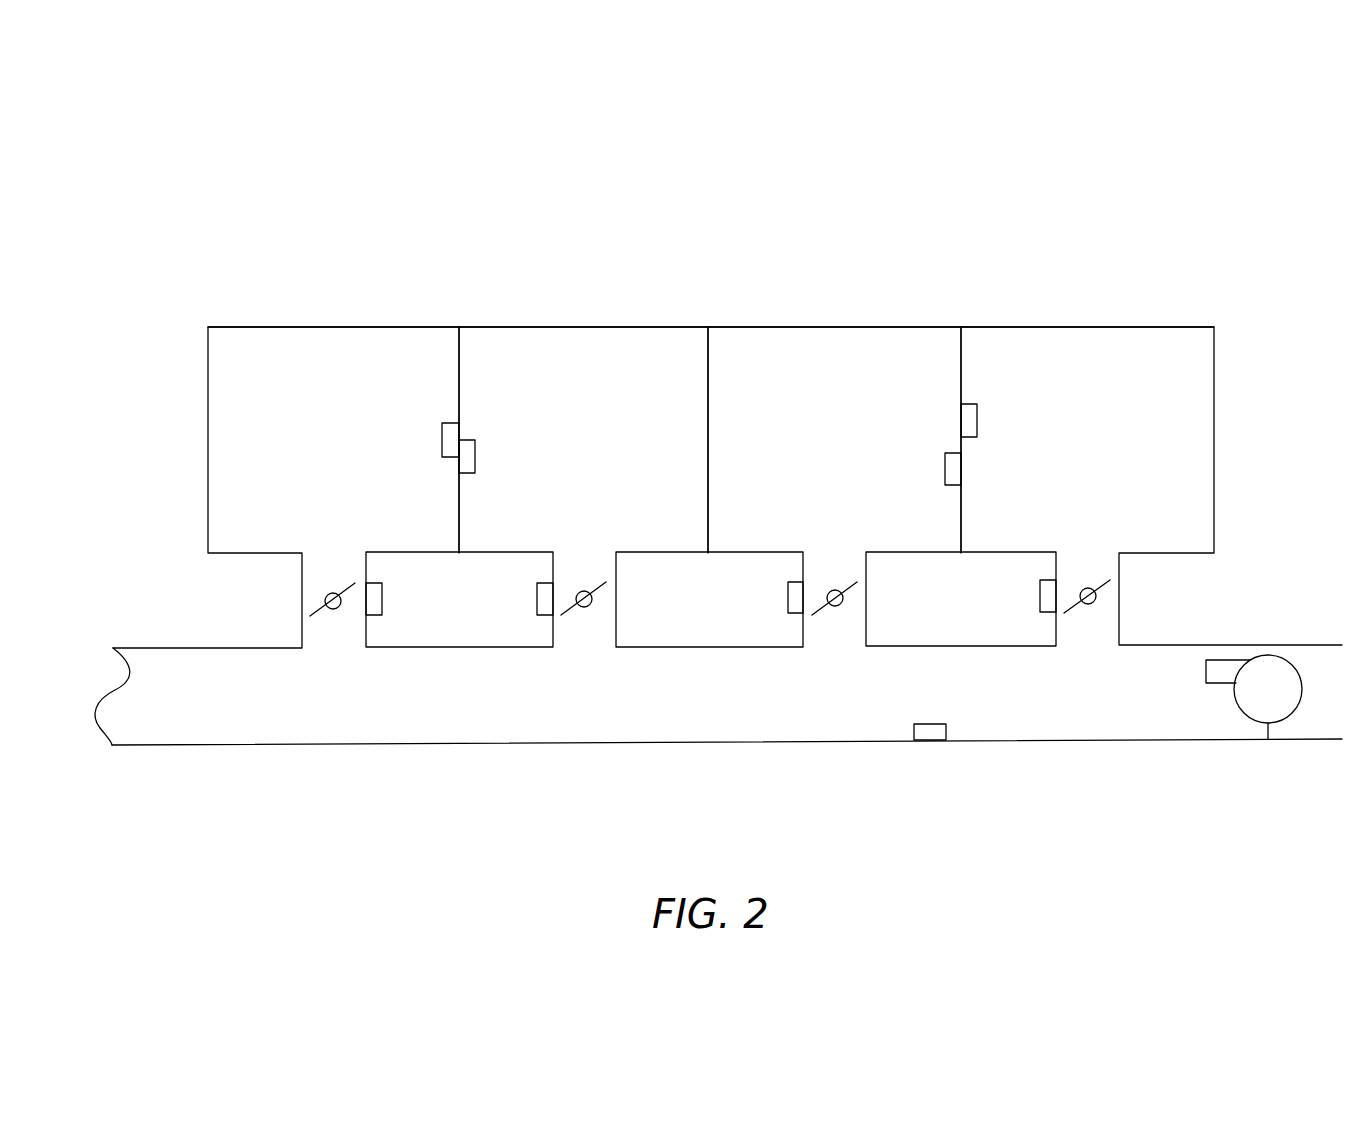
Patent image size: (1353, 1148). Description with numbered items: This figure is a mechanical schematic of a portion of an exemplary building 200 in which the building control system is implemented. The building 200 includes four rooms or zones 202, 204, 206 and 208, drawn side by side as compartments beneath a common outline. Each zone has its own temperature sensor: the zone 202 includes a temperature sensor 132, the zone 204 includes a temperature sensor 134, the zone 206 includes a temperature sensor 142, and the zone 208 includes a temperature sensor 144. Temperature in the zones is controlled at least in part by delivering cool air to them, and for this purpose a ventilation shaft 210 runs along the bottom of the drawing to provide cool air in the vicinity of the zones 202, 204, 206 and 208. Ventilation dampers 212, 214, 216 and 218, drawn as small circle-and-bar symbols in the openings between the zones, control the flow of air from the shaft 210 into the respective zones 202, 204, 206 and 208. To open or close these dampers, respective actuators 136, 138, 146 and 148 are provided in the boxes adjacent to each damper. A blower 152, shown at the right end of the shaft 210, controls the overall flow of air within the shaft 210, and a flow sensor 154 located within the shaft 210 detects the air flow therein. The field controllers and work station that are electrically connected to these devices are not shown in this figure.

The building 200 is at (1197, 210).
The zone 202 is at (338, 347).
The zone 204 is at (585, 345).
The zone 206 is at (838, 345).
The zone 208 is at (1090, 345).
The ventilation shaft 210 is at (660, 723).
The ventilation damper 212 is at (333, 593).
The ventilation damper 214 is at (584, 591).
The ventilation damper 216 is at (835, 590).
The ventilation damper 218 is at (1088, 588).
The temperature sensor 132 is at (442, 441).
The temperature sensor 134 is at (475, 455).
The actuator 136 is at (382, 597).
The actuator 138 is at (537, 600).
The temperature sensor 142 is at (945, 470).
The temperature sensor 144 is at (977, 420).
The actuator 146 is at (788, 600).
The actuator 148 is at (1040, 598).
The blower 152 is at (1268, 739).
The flow sensor 154 is at (946, 730).